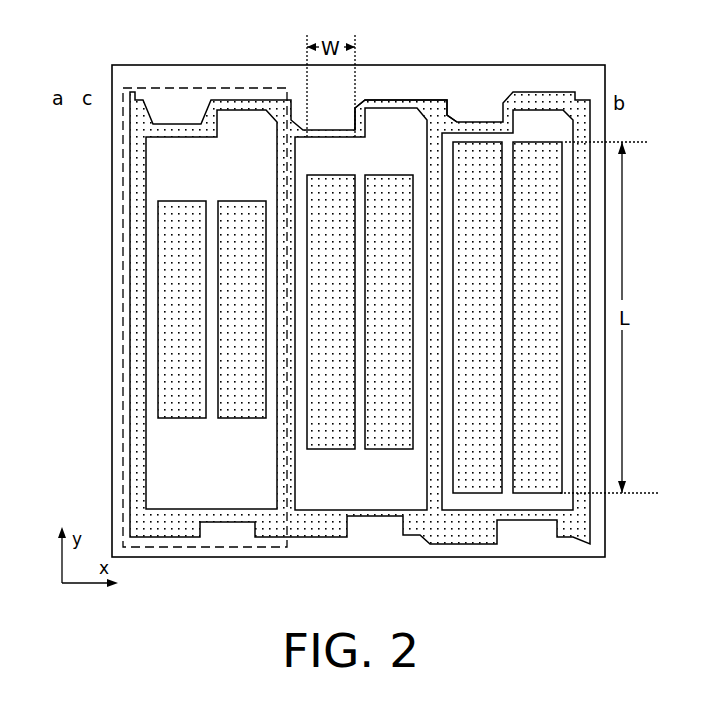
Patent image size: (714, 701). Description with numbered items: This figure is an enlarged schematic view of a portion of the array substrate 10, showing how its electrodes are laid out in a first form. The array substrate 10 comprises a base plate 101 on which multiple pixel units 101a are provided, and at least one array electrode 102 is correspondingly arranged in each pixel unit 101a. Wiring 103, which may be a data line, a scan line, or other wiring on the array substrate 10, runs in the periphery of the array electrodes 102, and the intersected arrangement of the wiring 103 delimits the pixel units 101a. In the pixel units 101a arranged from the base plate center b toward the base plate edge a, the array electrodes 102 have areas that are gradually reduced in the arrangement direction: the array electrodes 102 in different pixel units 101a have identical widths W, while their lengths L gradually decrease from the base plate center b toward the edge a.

The array substrate 10 is at (121, 49).
The base plate 101 is at (535, 90).
The pixel unit 101a is at (291, 552).
The array electrode 102 is at (472, 141).
The wiring 103 is at (398, 98).